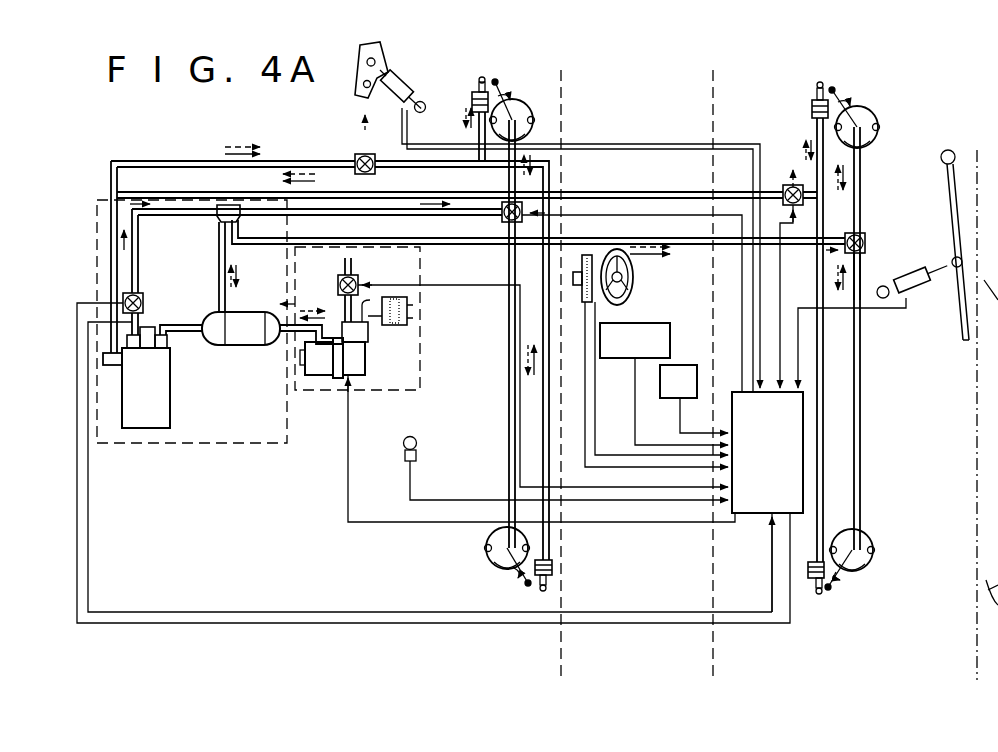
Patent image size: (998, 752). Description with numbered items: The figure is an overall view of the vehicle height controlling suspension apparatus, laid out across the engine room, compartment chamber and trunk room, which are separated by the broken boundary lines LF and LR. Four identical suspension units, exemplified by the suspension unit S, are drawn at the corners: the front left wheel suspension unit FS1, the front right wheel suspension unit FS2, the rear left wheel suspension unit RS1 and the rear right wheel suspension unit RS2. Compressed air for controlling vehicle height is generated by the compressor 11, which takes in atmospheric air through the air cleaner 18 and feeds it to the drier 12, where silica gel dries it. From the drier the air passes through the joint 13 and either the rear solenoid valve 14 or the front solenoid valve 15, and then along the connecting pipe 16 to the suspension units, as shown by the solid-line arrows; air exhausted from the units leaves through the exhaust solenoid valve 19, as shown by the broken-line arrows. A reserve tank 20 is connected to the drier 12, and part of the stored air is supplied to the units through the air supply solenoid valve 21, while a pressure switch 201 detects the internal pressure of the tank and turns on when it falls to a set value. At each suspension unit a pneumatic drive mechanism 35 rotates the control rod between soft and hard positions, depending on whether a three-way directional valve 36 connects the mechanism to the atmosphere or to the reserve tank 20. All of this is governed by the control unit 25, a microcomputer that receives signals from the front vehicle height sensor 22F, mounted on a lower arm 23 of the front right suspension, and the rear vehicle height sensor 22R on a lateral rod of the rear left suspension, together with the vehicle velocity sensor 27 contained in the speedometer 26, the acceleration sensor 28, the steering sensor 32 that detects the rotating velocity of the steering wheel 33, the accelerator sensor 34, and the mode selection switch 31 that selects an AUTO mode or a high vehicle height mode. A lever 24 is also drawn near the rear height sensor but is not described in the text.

The compressor 11 is at (365, 360).
The drier 12 is at (250, 345).
The joint 13 is at (217, 220).
The rear solenoid valve 14 is at (866, 234).
The front solenoid valve 15 is at (502, 218).
The pipe 16 is at (863, 280).
The air cleaner 18 is at (395, 325).
The exhaust solenoid valve 19 is at (358, 280).
The reserve tank 20 is at (170, 412).
The pressure switch 201 is at (148, 327).
The air supply solenoid valve 21 is at (145, 298).
The front vehicle height sensor 22F is at (438, 78).
The rear vehicle height sensor 22R is at (911, 268).
The lower arm 23 is at (385, 55).
The lever 24 is at (956, 172).
The control unit 25 is at (750, 513).
The speedometer 26 is at (584, 255).
The vehicle velocity sensor 27 is at (573, 291).
The acceleration sensor 28 is at (688, 365).
The mode selection switch 31 is at (655, 323).
The steering sensor 32 is at (615, 250).
The steering wheel 33 is at (634, 277).
The accelerator sensor 34 is at (417, 443).
The pneumatic drive mechanism 35 is at (472, 101).
The 3-way directional valve 36 is at (355, 160).
The suspension unit S is at (531, 104).
The front left wheel suspension unit FS1 is at (496, 562).
The front right wheel suspension unit FS2 is at (513, 98).
The rear left wheel suspension unit RS1 is at (872, 566).
The rear right wheel suspension unit RS2 is at (876, 118).
The boundary between engine room and compartment chamber LF is at (565, 88).
The boundary between compartment chamber and trunk room LR is at (715, 82).